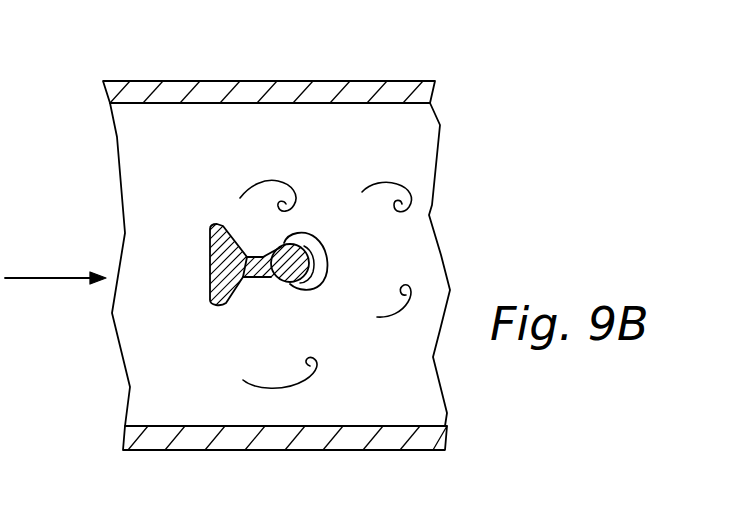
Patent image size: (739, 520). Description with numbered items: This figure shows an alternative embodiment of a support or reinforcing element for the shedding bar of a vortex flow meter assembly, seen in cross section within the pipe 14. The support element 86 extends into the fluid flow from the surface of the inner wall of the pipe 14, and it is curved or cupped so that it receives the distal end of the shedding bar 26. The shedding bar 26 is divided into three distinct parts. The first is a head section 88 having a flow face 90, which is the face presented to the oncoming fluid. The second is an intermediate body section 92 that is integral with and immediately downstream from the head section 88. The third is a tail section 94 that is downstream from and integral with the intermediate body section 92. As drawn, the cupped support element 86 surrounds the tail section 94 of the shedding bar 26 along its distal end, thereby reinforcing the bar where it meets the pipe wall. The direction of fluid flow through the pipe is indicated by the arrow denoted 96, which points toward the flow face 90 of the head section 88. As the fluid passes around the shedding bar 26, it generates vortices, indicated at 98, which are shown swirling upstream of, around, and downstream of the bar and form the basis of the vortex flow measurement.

The pipe 14 is at (273, 80).
The shedding bar 26 is at (205, 231).
The support element 86 is at (323, 253).
The head section 88 is at (242, 312).
The flow face 90 is at (205, 284).
The intermediate body section 92 is at (238, 290).
The tail section 94 is at (275, 294).
The fluid flow direction arrow 96 is at (43, 277).
The vortices 98 is at (258, 180).